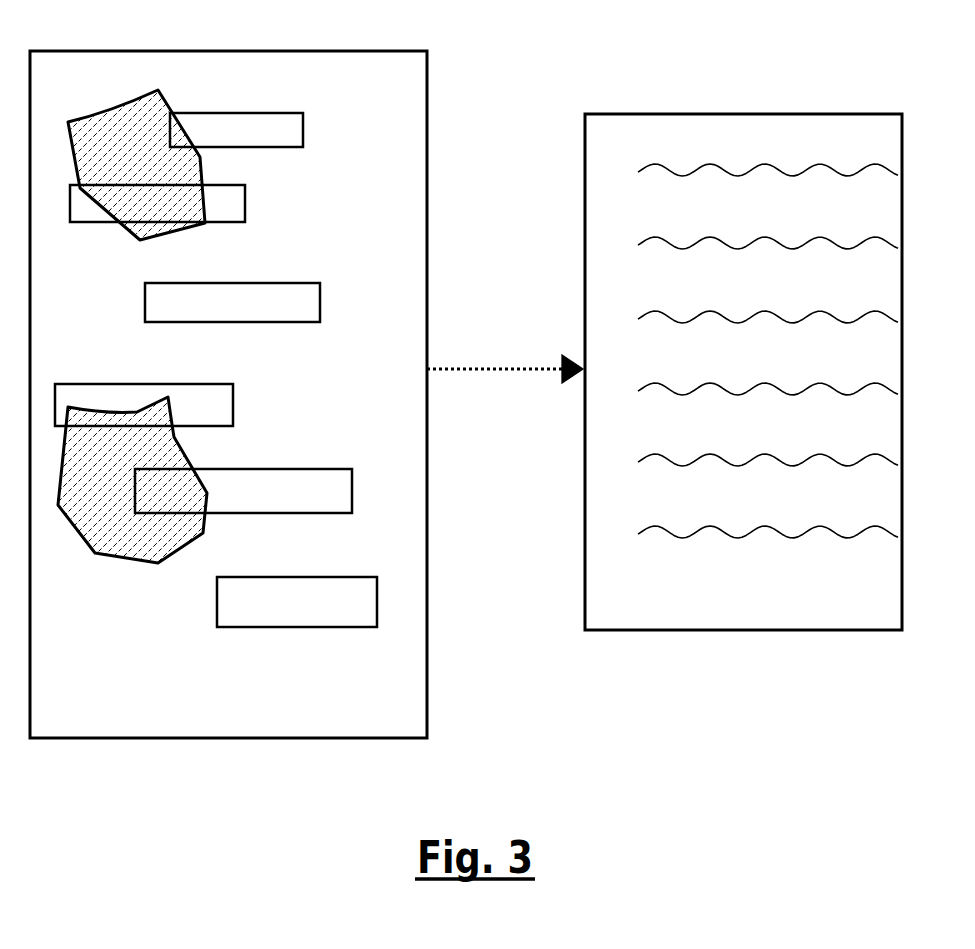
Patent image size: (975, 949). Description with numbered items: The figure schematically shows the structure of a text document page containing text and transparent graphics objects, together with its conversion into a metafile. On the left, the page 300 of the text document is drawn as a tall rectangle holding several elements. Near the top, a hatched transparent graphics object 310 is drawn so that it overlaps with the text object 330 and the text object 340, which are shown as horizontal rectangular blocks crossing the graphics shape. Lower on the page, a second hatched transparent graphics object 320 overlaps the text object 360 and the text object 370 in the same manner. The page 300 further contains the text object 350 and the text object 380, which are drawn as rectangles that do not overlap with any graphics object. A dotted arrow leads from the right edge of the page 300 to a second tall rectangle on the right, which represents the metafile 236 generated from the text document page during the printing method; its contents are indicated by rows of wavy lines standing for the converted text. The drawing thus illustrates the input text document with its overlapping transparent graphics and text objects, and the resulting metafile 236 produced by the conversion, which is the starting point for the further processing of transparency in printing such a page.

The page 300 is at (345, 58).
The transparent graphics object 310 is at (157, 112).
The transparent graphics object 320 is at (160, 453).
The text object 330 is at (280, 130).
The text object 340 is at (230, 205).
The text object 350 is at (285, 302).
The text object 360 is at (198, 407).
The text object 370 is at (297, 480).
The text object 380 is at (317, 575).
The metafile 236 is at (758, 100).